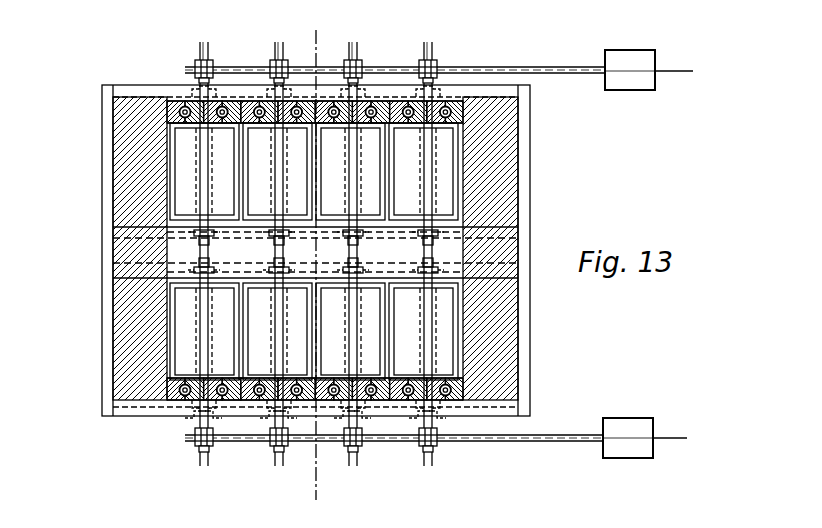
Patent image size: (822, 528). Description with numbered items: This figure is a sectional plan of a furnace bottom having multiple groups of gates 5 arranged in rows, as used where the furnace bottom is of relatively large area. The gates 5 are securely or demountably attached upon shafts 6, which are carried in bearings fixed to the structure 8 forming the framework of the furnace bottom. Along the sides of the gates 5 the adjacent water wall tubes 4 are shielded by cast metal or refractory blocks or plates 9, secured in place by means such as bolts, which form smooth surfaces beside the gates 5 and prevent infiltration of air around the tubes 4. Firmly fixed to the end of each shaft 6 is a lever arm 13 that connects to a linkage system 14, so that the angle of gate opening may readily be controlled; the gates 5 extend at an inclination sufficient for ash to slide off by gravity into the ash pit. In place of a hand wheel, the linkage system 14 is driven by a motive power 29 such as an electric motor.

The water wall tubes 4 is at (168, 401).
The gates 5 is at (183, 157).
The shaft 6 is at (206, 48).
The furnace framework 8 is at (103, 347).
The blocks or plates 9 is at (187, 423).
The lever arm 13 is at (212, 452).
The linkage system 14 is at (334, 37).
The motive power 29 is at (632, 55).